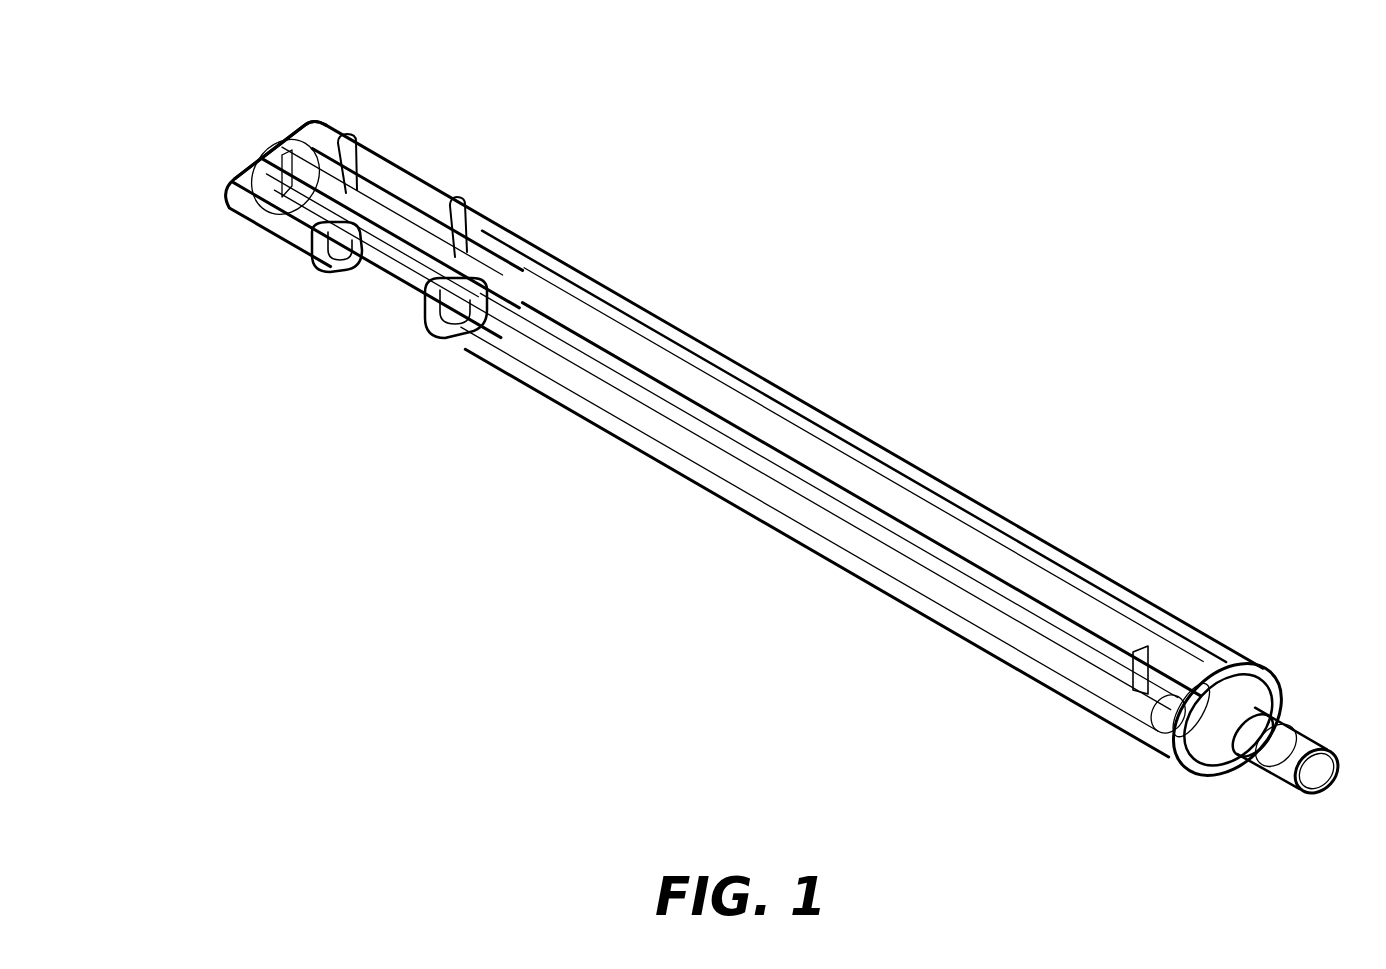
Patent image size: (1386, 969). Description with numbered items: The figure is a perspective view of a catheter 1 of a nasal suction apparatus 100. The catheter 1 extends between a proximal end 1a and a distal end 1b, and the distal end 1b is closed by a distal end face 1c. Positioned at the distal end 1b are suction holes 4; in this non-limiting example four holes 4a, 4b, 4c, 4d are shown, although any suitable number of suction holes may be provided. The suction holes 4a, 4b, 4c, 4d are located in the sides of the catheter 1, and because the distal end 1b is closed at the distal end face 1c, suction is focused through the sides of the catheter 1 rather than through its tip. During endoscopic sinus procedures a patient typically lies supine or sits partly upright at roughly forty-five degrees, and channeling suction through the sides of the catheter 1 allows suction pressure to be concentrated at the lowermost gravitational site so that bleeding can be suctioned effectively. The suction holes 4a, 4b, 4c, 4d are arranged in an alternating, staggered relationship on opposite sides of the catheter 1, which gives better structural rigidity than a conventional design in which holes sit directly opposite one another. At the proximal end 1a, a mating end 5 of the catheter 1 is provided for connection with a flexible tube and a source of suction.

The nasal suction apparatus 100 is at (733, 430).
The catheter 1 is at (733, 430).
The proximal end 1a is at (1295, 675).
The distal end 1b is at (222, 230).
The distal end face 1c is at (288, 134).
The suction holes 4 is at (430, 208).
The suction hole 4a is at (452, 352).
The suction hole 4b is at (483, 217).
The suction hole 4c is at (327, 288).
The suction hole 4d is at (363, 153).
The mating end 5 is at (1290, 771).